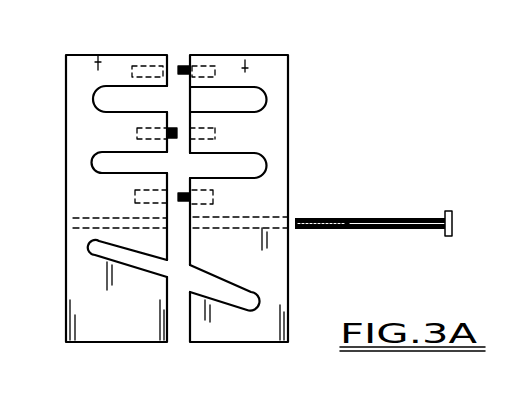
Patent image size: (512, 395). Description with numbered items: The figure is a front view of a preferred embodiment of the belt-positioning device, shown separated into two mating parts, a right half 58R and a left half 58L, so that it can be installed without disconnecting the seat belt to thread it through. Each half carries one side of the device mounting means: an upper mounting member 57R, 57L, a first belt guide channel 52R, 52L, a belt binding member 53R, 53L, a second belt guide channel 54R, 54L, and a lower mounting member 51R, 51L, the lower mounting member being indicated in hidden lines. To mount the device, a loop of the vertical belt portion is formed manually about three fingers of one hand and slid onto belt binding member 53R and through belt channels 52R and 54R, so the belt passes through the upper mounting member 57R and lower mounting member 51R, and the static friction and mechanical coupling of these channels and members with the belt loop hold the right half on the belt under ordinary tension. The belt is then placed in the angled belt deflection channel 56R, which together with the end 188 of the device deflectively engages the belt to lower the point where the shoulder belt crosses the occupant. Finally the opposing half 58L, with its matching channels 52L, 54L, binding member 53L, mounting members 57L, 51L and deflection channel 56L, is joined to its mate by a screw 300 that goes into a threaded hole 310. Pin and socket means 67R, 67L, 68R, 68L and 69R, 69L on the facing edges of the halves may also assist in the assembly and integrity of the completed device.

The end 188 is at (130, 332).
The upper mounting member 57R is at (82, 63).
The upper mounting member 57L is at (280, 63).
The right device half 58R is at (166, 32).
The left device half 58L is at (190, 54).
The pin and socket means 67R is at (130, 68).
The pin and socket means 67L is at (215, 72).
The belt guide channel 52R is at (92, 100).
The belt guide channel 52L is at (268, 100).
The belt binding member 53R is at (80, 132).
The belt binding member 53L is at (290, 133).
The belt guide channel 54R is at (93, 157).
The belt guide channel 54L is at (212, 159).
The pin and socket means 68R is at (93, 163).
The pin and socket means 68L is at (267, 165).
The pin and socket means 69R is at (135, 195).
The pin and socket means 69L is at (288, 198).
The lower mounting member 51R is at (73, 219).
The lower mounting member 51L is at (290, 183).
The threaded hole 310 is at (88, 232).
The belt deflection means 56R is at (97, 258).
The belt deflection means 56L is at (262, 287).
The screw 300 is at (365, 229).